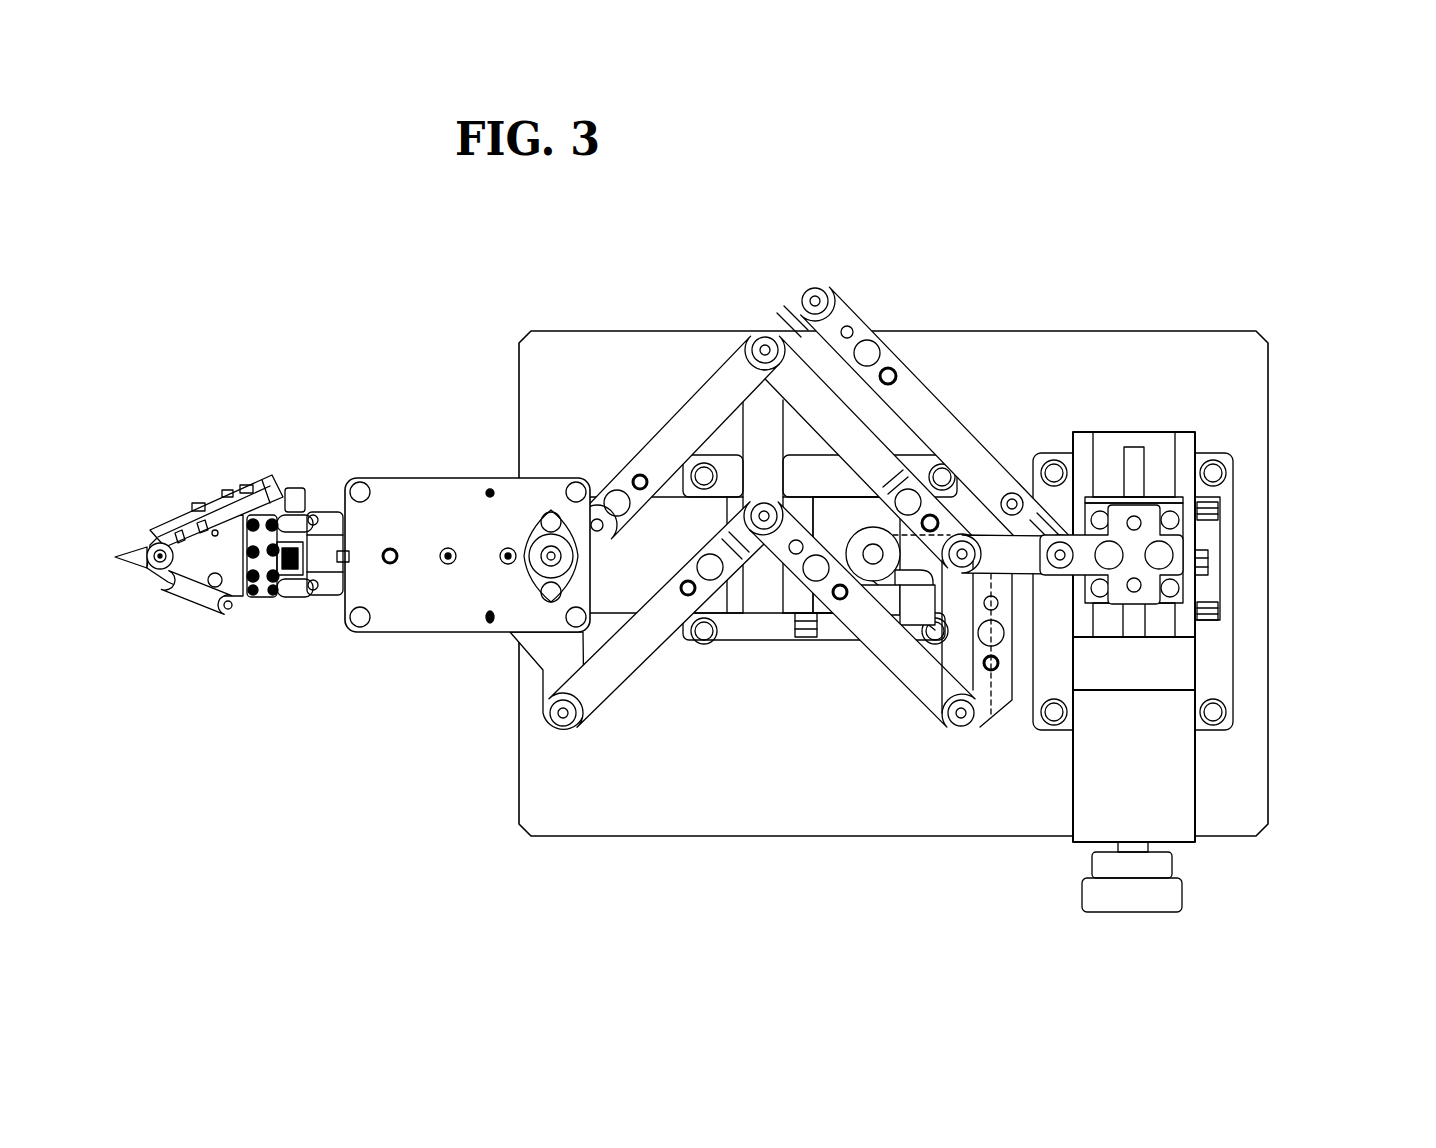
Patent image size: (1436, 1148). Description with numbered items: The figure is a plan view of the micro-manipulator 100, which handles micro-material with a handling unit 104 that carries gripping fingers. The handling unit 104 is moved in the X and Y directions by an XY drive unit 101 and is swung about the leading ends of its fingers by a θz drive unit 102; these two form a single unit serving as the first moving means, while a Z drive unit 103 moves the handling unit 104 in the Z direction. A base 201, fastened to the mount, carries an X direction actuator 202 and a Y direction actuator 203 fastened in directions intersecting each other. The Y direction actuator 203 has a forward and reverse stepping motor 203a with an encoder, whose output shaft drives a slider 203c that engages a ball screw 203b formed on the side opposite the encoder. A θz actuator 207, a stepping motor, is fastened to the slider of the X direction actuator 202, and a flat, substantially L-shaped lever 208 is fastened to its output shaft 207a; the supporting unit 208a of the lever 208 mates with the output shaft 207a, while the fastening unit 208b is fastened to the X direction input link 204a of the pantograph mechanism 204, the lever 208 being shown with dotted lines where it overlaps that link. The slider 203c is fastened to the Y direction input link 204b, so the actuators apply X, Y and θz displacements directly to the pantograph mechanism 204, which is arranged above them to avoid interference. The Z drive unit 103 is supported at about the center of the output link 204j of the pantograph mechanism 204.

The micro-manipulator 100 is at (855, 164).
The XY drive unit 101 is at (938, 234).
The θz drive unit 102 is at (752, 556).
The Z drive unit 103 is at (345, 657).
The handling unit 104 is at (185, 478).
The base 201 is at (1268, 447).
The X direction actuator 202 is at (727, 682).
The Y direction actuator 203 is at (1208, 672).
The stepping motor 203a is at (1193, 815).
The ball screw 203b is at (1143, 618).
The slider 203c is at (1190, 530).
The pantograph mechanism 204 is at (810, 525).
The X direction input link 204a is at (1002, 700).
The Y direction input link 204b is at (1120, 522).
The output link 204j is at (543, 652).
The θz actuator 207 is at (943, 449).
The output shaft 207a is at (880, 549).
The lever 208 is at (874, 706).
The supporting unit 208a is at (875, 602).
The fastening unit 208b is at (955, 648).